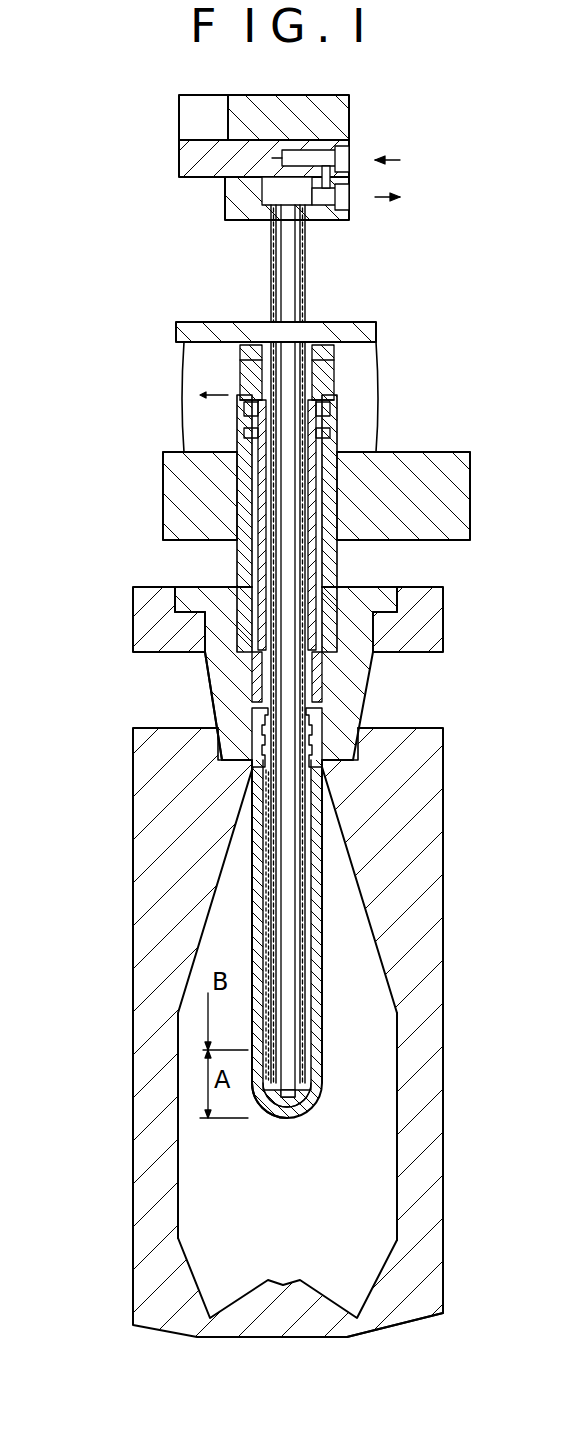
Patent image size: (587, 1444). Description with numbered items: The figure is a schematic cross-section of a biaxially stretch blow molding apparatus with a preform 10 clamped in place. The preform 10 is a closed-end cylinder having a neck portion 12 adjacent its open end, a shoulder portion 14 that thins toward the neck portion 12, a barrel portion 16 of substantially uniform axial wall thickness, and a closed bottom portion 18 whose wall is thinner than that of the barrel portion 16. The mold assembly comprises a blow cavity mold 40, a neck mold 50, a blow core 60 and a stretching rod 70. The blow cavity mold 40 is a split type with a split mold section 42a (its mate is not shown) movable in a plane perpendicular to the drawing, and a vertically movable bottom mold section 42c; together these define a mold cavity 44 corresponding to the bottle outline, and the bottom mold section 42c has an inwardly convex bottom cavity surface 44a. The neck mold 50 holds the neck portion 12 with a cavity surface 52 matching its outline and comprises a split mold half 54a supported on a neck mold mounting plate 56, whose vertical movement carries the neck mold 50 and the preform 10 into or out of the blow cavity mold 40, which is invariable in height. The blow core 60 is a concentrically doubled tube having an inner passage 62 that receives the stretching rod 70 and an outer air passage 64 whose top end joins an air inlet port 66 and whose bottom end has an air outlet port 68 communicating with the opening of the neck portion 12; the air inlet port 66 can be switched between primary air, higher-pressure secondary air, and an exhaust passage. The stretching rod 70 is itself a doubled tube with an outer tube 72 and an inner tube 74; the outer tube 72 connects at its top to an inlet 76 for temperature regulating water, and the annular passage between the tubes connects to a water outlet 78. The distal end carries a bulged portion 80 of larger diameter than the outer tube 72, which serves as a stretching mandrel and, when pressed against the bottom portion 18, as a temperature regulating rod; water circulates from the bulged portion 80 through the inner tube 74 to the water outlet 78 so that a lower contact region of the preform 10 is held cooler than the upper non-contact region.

The preform 10 is at (326, 940).
The neck portion 12 is at (322, 722).
The shoulder portion 14 is at (330, 790).
The barrel portion 16 is at (318, 892).
The bottom portion 18 is at (290, 1116).
The blow cavity mold 40 is at (430, 853).
The split mold section 42a is at (162, 1010).
The bottom mold section 42c is at (345, 1318).
The mold cavity 44 is at (392, 1195).
The bottom cavity surface 44a is at (252, 1293).
The neck mold 50 is at (356, 682).
The cavity surface 52 is at (252, 720).
The split mold half 54a is at (222, 684).
The neck mold mounting plate 56 is at (443, 620).
The blow core 60 is at (325, 566).
The inner passage 62 is at (312, 448).
The outer air passage 64 is at (262, 427).
The air inlet port 66 is at (240, 382).
The air outlet port 68 is at (258, 668).
The stretching rod 70 is at (306, 291).
The outer tube 72 is at (257, 840).
The inner tube 74 is at (296, 942).
The inlet 76 is at (348, 158).
The water outlet 78 is at (348, 197).
The bulged portion 80 is at (262, 1090).